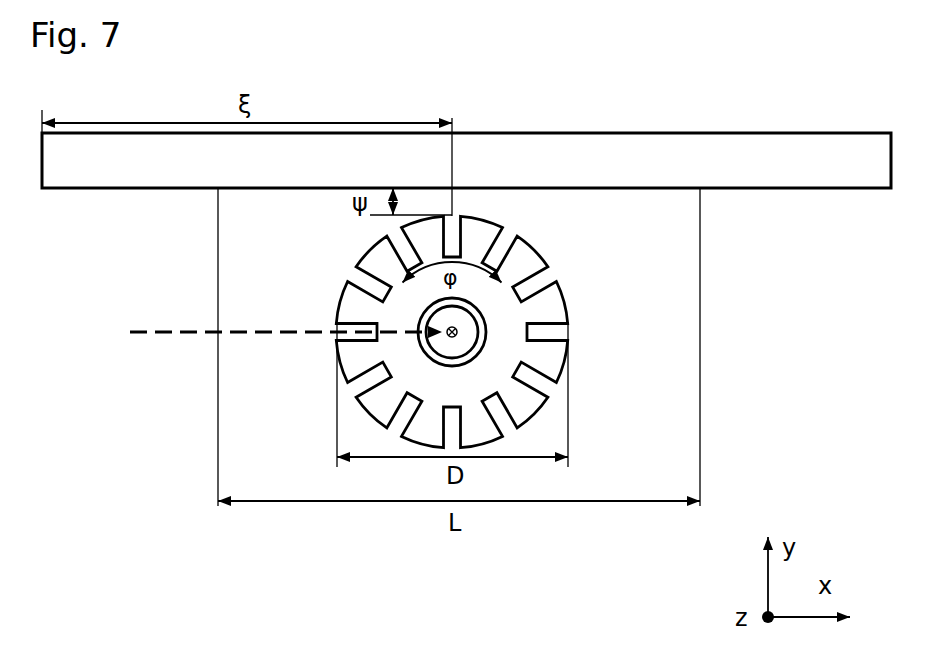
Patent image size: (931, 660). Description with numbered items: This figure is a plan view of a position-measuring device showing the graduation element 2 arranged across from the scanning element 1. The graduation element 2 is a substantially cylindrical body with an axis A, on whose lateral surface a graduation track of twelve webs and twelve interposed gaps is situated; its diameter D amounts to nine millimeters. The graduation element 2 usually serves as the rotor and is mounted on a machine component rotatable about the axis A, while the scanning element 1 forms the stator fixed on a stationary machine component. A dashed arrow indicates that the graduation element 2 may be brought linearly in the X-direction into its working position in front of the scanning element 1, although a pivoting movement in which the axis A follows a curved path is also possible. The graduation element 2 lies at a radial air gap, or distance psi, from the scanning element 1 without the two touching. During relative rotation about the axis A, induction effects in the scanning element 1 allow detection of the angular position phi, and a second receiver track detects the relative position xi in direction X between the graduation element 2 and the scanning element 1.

The scanning element 1 is at (608, 157).
The graduation element 2 is at (556, 291).
The axis A is at (458, 333).